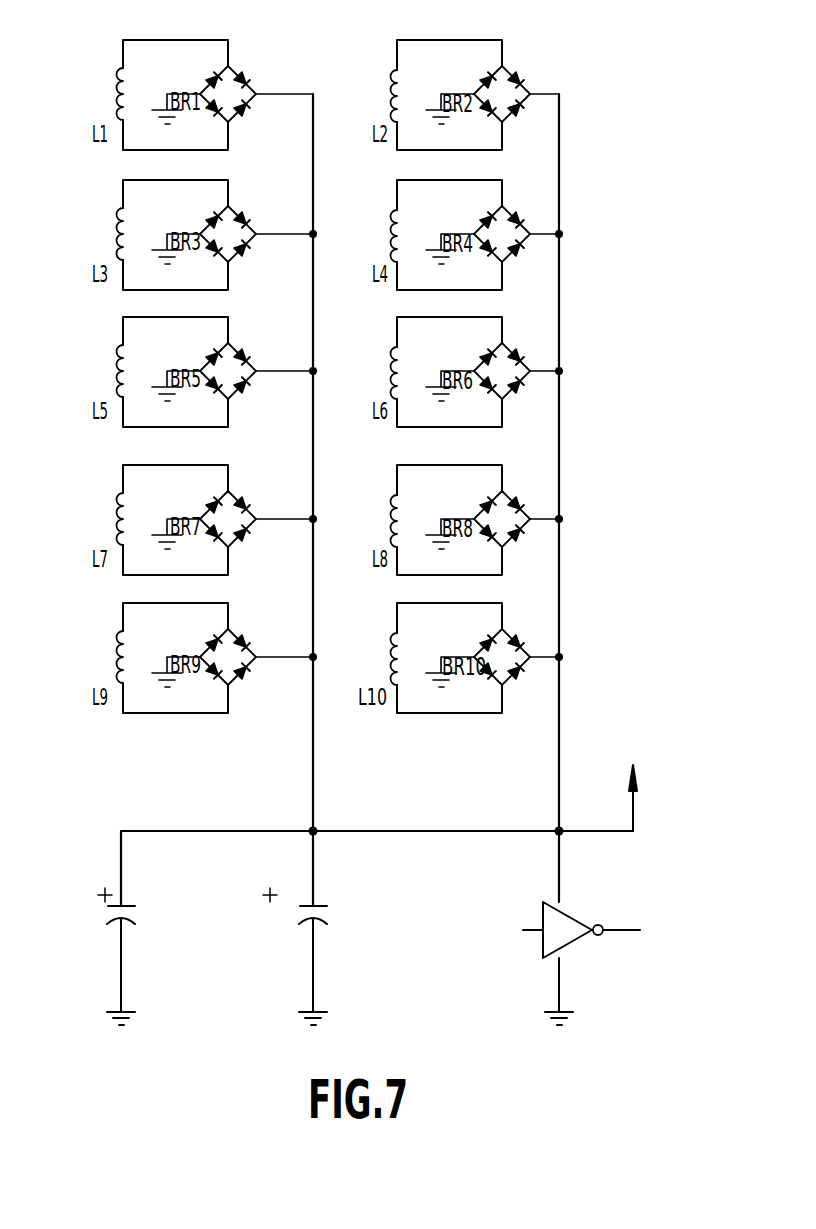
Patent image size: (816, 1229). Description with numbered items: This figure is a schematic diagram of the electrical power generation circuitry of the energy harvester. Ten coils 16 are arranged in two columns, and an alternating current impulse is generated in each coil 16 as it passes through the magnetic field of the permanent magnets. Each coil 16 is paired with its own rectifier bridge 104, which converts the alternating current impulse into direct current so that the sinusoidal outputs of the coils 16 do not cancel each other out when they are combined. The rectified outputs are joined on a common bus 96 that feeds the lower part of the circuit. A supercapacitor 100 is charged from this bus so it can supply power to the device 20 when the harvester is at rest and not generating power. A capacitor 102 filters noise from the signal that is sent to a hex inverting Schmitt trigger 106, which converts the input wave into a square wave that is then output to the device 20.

The coil 16 is at (118, 60).
The rectifier bridge 104 is at (233, 29).
The power bus 96 is at (313, 768).
The supercapacitor 100 is at (117, 914).
The capacitor 102 is at (308, 915).
The hex inverting Schmitt trigger 106 is at (584, 917).
The device 20 is at (633, 753).